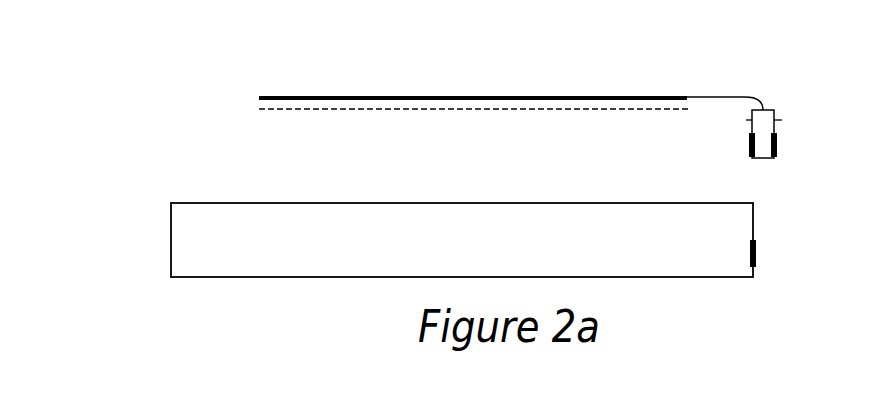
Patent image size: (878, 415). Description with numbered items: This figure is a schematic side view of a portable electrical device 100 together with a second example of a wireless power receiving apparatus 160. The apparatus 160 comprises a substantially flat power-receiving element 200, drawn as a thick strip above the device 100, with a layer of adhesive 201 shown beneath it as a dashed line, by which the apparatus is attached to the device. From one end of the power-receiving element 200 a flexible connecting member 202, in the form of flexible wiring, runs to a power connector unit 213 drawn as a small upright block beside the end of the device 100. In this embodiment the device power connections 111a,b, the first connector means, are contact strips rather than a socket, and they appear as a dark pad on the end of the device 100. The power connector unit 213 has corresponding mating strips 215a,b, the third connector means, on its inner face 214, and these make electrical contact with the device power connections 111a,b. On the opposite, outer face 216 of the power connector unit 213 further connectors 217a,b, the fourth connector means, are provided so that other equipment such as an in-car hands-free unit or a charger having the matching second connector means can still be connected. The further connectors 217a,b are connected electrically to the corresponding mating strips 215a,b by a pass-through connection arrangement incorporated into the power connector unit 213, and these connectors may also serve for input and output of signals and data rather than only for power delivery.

The wireless power receiving apparatus 160 is at (282, 67).
The power-receiving element 200 is at (347, 97).
The layer of adhesive 201 is at (273, 111).
The flexible connecting member 202 is at (737, 96).
The power connector unit 213 is at (763, 160).
The inner face 214 is at (746, 120).
The outer face 216 is at (782, 120).
The mating strips 215a,b is at (749, 145).
The further connectors 217a,b is at (777, 145).
The portable electrical device 100 is at (170, 203).
The device power connections 111a,b is at (757, 252).